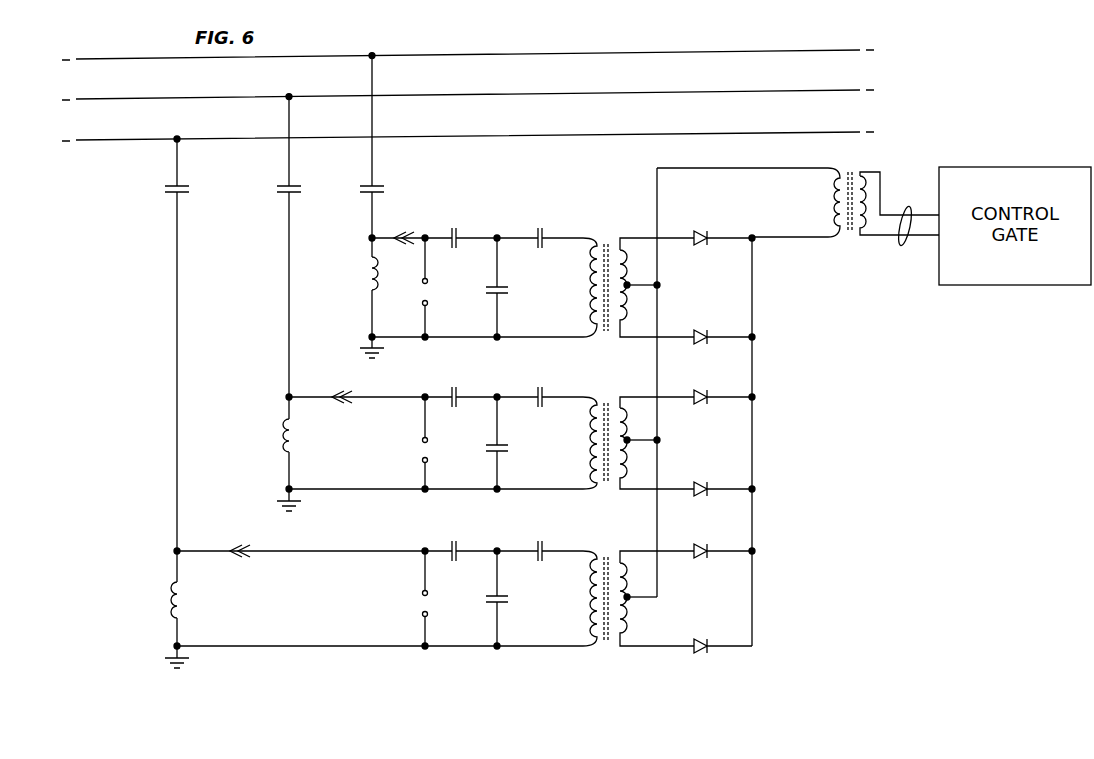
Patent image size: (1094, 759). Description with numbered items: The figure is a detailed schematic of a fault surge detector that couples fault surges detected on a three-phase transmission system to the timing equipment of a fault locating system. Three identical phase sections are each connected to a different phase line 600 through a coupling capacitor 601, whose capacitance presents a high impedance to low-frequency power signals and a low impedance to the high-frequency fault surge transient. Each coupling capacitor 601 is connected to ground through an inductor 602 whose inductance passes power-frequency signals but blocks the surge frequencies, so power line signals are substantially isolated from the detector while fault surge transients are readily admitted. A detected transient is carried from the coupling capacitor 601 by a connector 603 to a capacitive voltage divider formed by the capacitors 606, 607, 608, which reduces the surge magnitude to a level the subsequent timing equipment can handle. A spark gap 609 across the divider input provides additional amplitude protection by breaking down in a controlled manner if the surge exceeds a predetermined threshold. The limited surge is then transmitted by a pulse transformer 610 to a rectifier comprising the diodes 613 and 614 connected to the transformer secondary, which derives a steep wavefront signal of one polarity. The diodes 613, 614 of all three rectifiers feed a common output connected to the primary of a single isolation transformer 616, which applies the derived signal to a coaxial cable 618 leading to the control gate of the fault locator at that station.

The phase line 600 is at (430, 54).
The coupling capacitor 601 is at (386, 192).
The inductor 602 is at (360, 272).
The connector 603 is at (418, 224).
The capacitor 606 is at (454, 226).
The capacitor 607 is at (488, 289).
The capacitor 608 is at (540, 226).
The spark gap 609 is at (420, 288).
The pulse transformer 610 is at (619, 231).
The diode 613 is at (706, 230).
The diode 614 is at (706, 329).
The isolation transformer 616 is at (862, 160).
The coaxial cable 618 is at (905, 214).